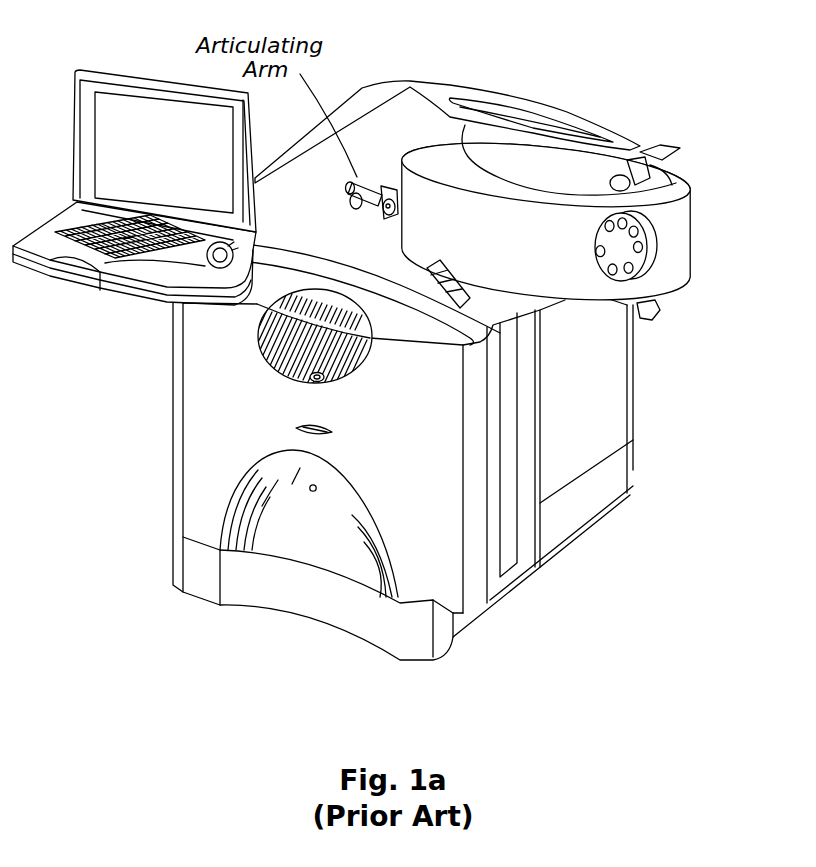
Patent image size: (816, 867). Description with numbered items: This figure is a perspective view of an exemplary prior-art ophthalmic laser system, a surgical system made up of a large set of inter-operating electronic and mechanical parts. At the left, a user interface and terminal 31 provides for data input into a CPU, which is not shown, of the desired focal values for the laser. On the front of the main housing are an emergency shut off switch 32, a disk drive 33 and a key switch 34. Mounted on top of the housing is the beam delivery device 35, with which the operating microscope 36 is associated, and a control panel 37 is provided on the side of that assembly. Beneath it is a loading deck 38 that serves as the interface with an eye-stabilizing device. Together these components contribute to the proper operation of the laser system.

The user interface and terminal 31 is at (107, 142).
The emergency shut off switch 32 is at (300, 378).
The disk drive 33 is at (293, 430).
The key switch 34 is at (308, 490).
The beam delivery device 35 is at (422, 158).
The operating microscope 36 is at (670, 158).
The control panel 37 is at (653, 237).
The loading deck 38 is at (657, 308).